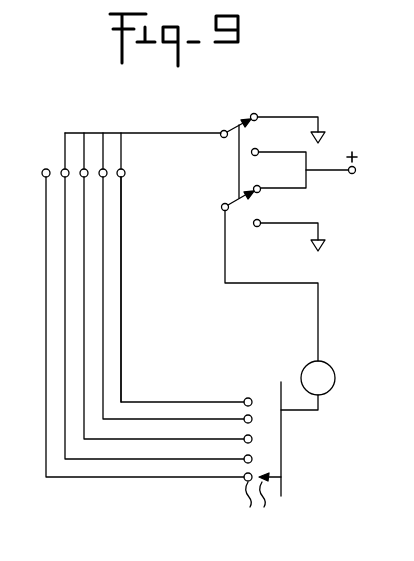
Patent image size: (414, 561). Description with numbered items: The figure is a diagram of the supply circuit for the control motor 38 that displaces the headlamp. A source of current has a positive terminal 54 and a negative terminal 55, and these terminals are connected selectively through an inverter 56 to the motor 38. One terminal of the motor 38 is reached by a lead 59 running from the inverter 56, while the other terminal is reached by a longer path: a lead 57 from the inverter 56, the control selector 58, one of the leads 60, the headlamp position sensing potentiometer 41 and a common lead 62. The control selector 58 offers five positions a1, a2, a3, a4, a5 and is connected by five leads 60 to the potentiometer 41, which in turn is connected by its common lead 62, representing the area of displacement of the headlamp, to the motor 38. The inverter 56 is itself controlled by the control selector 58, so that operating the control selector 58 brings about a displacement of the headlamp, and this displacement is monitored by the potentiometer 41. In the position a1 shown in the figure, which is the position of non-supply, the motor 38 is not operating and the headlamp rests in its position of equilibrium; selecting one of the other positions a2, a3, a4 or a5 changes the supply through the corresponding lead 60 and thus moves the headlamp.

The position a1 is at (46, 169).
The position a2 is at (46, 118).
The position a3 is at (84, 132).
The position a4 is at (86, 118).
The position a5 is at (121, 132).
The lead 57 is at (181, 133).
The control selector 58 is at (125, 147).
The inverter 56 is at (236, 125).
The negative terminal 55 is at (326, 138).
The positive terminal 54 is at (320, 170).
The lead 59 is at (318, 313).
The motor 38 is at (326, 373).
The leads 60 is at (121, 332).
The common lead 62 is at (305, 411).
The headlamp position sensing potentiometer 41 is at (261, 460).